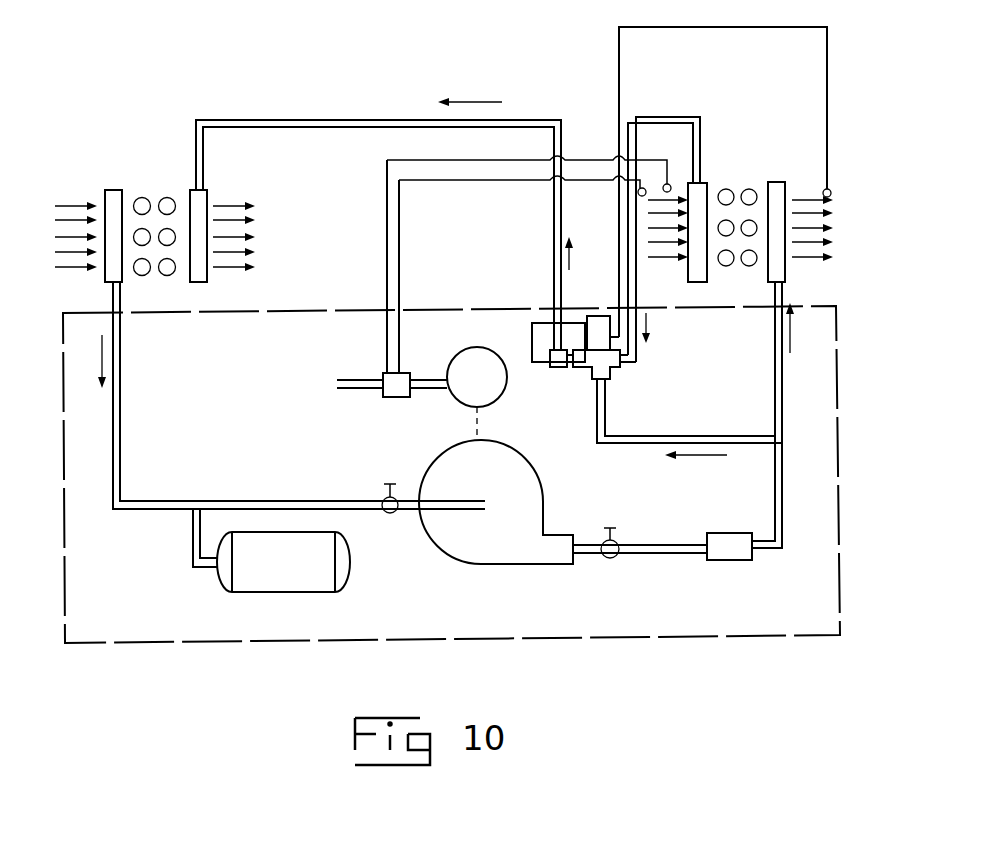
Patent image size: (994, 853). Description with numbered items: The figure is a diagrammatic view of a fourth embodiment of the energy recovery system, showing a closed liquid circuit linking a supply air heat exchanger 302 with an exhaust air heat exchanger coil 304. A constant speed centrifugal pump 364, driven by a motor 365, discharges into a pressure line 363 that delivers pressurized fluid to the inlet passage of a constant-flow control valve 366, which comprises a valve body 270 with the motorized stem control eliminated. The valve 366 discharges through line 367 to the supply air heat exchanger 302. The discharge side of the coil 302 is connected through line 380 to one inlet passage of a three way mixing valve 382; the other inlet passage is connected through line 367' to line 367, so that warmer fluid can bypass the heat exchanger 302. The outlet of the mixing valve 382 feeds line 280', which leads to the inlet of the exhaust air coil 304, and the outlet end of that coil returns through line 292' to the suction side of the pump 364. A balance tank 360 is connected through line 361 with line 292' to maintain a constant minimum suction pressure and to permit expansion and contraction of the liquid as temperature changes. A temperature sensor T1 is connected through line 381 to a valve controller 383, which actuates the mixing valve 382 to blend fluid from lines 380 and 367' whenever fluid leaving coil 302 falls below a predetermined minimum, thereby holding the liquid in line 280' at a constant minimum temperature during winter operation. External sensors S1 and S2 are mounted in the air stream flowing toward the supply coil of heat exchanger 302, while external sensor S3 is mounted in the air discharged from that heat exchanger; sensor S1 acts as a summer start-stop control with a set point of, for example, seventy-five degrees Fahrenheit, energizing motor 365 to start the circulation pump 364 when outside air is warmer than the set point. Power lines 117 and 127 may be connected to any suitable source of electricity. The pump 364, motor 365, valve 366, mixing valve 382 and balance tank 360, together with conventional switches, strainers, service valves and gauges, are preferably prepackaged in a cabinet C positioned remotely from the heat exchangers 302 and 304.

The cabinet C is at (650, 635).
The exhaust air heat exchanger coil 304 is at (151, 184).
The line 280' is at (384, 219).
The valve controller 383 is at (619, 82).
The line 380 is at (700, 119).
The supply air heat exchanger 302 is at (803, 140).
The external sensor S1 is at (638, 194).
The external sensor S2 is at (671, 186).
The external sensor S3 is at (829, 189).
The line 381 is at (543, 322).
The temperature sensor T1 is at (553, 364).
The three way mixing valve 382 is at (618, 376).
The motor 365 is at (477, 349).
The power line 117 is at (352, 379).
The power line 127 is at (347, 389).
The line 292' is at (244, 395).
The line 361 is at (193, 528).
The balance tank 360 is at (283, 585).
The constant speed centrifugal pump 364 is at (482, 560).
The pressure line 363 is at (650, 555).
The constant-flow control valve 366 is at (745, 568).
The valve body 270 is at (742, 500).
The line 367 is at (746, 362).
The line 367' is at (689, 419).